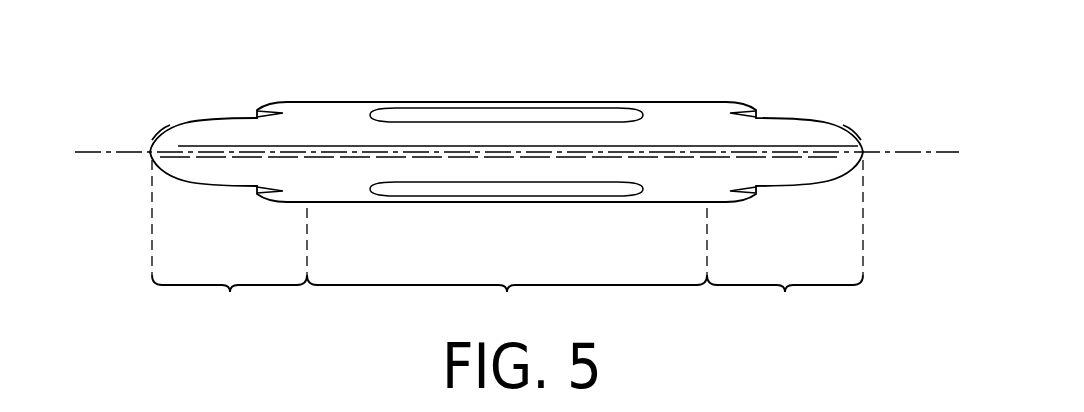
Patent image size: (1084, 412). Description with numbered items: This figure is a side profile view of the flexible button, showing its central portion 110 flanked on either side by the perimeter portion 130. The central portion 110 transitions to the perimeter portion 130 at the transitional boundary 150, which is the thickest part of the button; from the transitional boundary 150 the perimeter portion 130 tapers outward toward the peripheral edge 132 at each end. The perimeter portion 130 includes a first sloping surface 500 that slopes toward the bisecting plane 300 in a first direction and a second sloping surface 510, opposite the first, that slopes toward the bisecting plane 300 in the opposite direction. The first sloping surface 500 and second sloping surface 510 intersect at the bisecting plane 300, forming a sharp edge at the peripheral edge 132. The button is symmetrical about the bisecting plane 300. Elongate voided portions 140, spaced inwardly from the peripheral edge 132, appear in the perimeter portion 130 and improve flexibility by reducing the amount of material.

The first sloping surface 500 is at (317, 123).
The second sloping surface 510 is at (332, 182).
The transitional boundary 150 is at (720, 102).
The voided portions 140 is at (260, 112).
The peripheral edge 132 is at (150, 150).
The bisecting plane 300 is at (118, 153).
The central portion 110 is at (507, 300).
The perimeter portion 130 is at (507, 242).